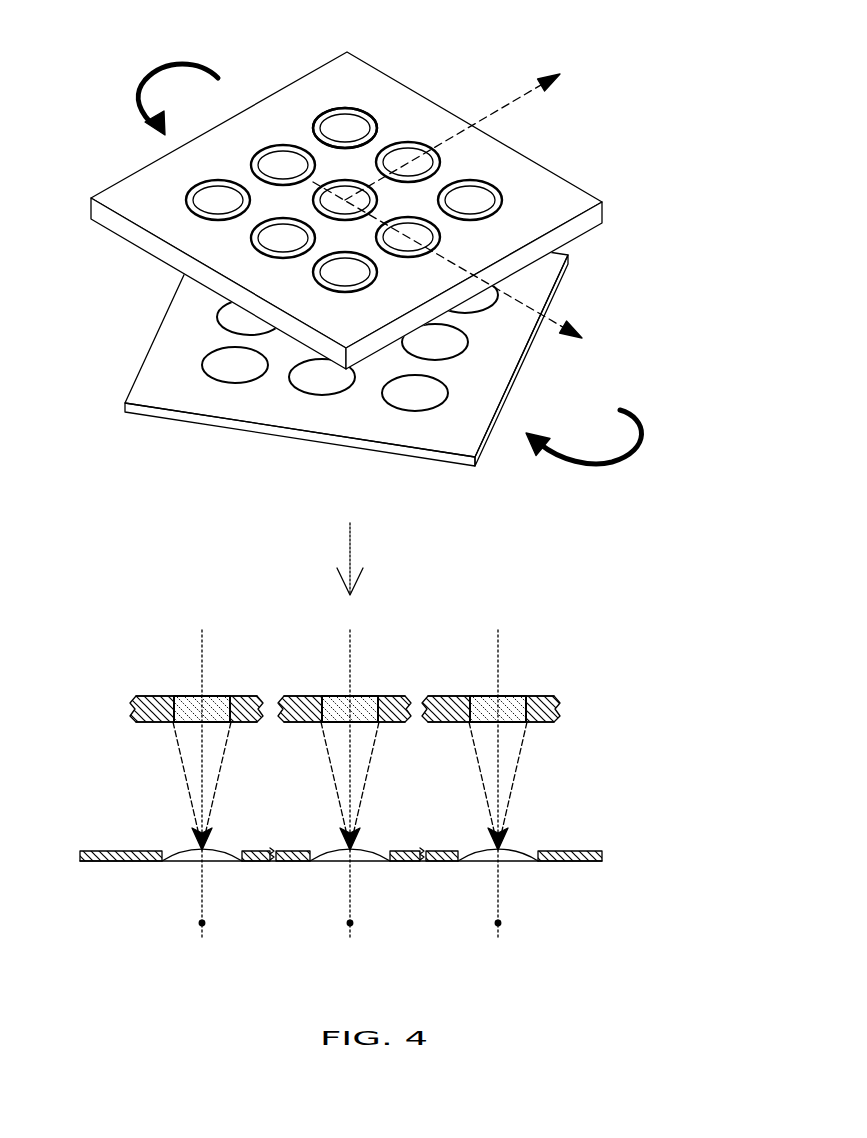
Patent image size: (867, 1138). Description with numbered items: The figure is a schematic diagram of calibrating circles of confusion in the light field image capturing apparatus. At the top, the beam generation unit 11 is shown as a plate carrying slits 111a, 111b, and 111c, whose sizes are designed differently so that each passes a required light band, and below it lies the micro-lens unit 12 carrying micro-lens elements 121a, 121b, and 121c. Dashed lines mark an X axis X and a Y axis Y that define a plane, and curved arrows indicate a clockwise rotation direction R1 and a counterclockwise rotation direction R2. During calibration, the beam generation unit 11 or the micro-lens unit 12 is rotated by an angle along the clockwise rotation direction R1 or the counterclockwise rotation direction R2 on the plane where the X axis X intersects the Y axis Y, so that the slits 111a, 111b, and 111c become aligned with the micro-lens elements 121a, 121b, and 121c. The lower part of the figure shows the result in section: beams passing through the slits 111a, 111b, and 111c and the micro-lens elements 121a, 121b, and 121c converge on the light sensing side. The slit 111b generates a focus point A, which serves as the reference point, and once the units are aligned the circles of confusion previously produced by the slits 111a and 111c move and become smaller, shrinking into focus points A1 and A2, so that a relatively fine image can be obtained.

The beam generation unit 11 is at (525, 188).
The micro-lens unit 12 is at (538, 282).
The slit 111a is at (190, 198).
The slit 111b is at (252, 240).
The slit 111c is at (322, 108).
The micro-lens element 121a is at (228, 383).
The micro-lens element 121b is at (320, 397).
The micro-lens element 121c is at (511, 850).
The clockwise rotation direction R1 is at (622, 458).
The counterclockwise rotation direction R2 is at (145, 73).
The X axis X is at (457, 267).
The Y axis Y is at (460, 131).
The focus point A is at (348, 923).
The focus point A1 is at (200, 923).
The focus point A2 is at (496, 923).